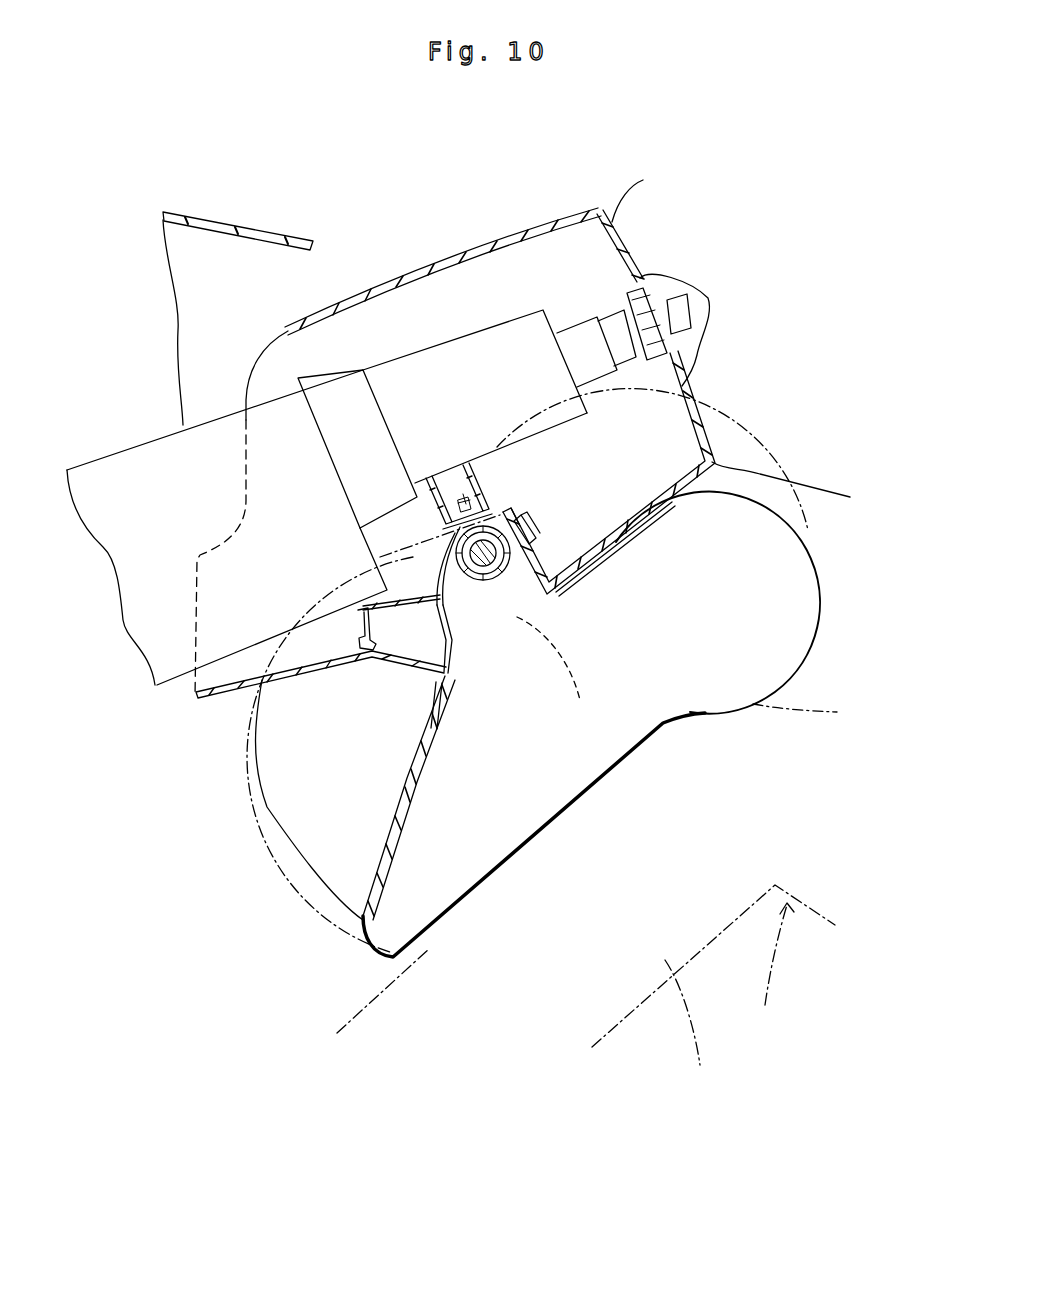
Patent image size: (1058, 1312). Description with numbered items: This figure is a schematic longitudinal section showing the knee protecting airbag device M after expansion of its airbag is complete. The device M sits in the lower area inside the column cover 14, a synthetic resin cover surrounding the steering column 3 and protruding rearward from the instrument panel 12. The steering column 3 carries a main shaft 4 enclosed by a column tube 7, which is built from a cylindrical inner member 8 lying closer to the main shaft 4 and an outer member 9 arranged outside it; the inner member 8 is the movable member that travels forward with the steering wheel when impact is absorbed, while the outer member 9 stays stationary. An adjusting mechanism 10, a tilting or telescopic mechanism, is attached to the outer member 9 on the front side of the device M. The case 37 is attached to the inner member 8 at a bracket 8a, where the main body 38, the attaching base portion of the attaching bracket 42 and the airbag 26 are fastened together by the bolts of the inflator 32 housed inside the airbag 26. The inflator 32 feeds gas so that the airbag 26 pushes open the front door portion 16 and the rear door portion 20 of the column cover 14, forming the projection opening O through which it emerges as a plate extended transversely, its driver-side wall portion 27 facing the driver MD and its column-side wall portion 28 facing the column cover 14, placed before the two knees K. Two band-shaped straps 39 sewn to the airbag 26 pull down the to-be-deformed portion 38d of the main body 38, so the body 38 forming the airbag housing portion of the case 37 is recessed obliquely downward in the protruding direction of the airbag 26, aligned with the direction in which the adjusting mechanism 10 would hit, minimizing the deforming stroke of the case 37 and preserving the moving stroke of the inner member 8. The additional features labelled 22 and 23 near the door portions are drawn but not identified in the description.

The steering column 3 is at (527, 290).
The main shaft 4 is at (570, 337).
The column tube 7 is at (338, 224).
The inner member 8 is at (455, 367).
The bracket 8a is at (476, 483).
The outer member 9 is at (334, 374).
The adjusting mechanism 10 is at (222, 417).
The instrument panel 12 is at (383, 841).
The column cover 14 is at (490, 245).
The front door portion 16 is at (427, 713).
The rear door portion 20 is at (594, 571).
The engaging hook 22 is at (340, 626).
The seal member 23 is at (538, 556).
The airbag 26 is at (772, 498).
The driver-side wall portion 27 is at (672, 726).
The column-side wall portion 28 is at (431, 758).
The inflator 32 is at (518, 583).
The case 37 is at (549, 514).
The main body 38 is at (420, 525).
The to-be-deformed portion 38d is at (451, 627).
The straps 39 is at (457, 641).
The attaching bracket 42 is at (521, 504).
The knee protecting airbag device M is at (685, 444).
The projection opening O is at (572, 725).
The knees K is at (713, 999).
The driver MD is at (779, 981).